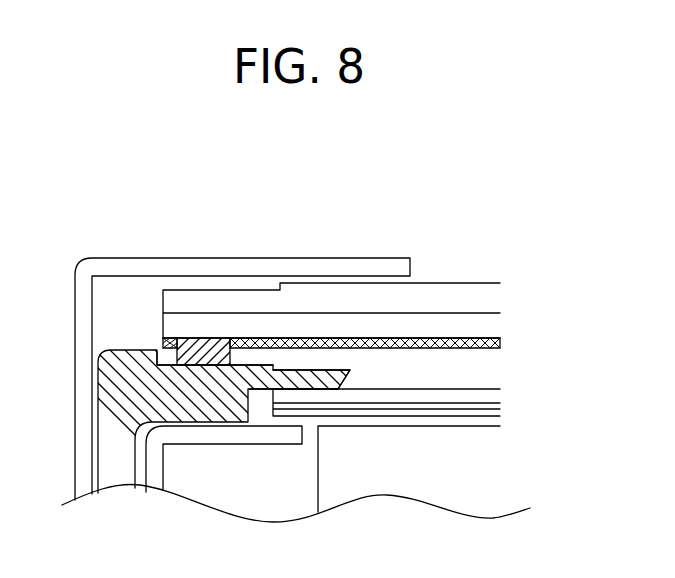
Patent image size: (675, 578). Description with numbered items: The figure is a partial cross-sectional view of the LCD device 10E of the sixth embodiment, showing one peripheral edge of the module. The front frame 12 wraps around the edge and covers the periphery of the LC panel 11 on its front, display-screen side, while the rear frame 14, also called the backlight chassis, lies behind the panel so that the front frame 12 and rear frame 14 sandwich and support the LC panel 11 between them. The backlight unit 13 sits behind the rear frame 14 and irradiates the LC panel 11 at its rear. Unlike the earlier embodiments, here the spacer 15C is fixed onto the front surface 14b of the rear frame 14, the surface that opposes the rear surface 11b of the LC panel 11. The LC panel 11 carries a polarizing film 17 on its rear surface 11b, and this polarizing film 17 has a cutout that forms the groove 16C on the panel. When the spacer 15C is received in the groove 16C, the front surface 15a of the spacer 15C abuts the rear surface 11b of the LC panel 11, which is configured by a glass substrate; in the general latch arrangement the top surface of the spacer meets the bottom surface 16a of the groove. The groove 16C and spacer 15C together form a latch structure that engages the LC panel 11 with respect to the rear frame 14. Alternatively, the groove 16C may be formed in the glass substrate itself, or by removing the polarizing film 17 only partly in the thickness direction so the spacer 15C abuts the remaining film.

The LCD device 10E is at (365, 206).
The LC panel 11 is at (509, 306).
The rear surface of the LC panel 11b is at (471, 350).
The front frame 12 is at (81, 259).
The backlight unit 13 is at (444, 472).
The rear frame 14 is at (123, 471).
The front surface of the rear frame 14b is at (337, 368).
The front surface of the spacer 15a is at (197, 338).
The spacer 15C is at (204, 366).
The bottom surface of the groove 16a is at (205, 362).
The groove 16C is at (247, 338).
The polarizing film 17 is at (501, 342).